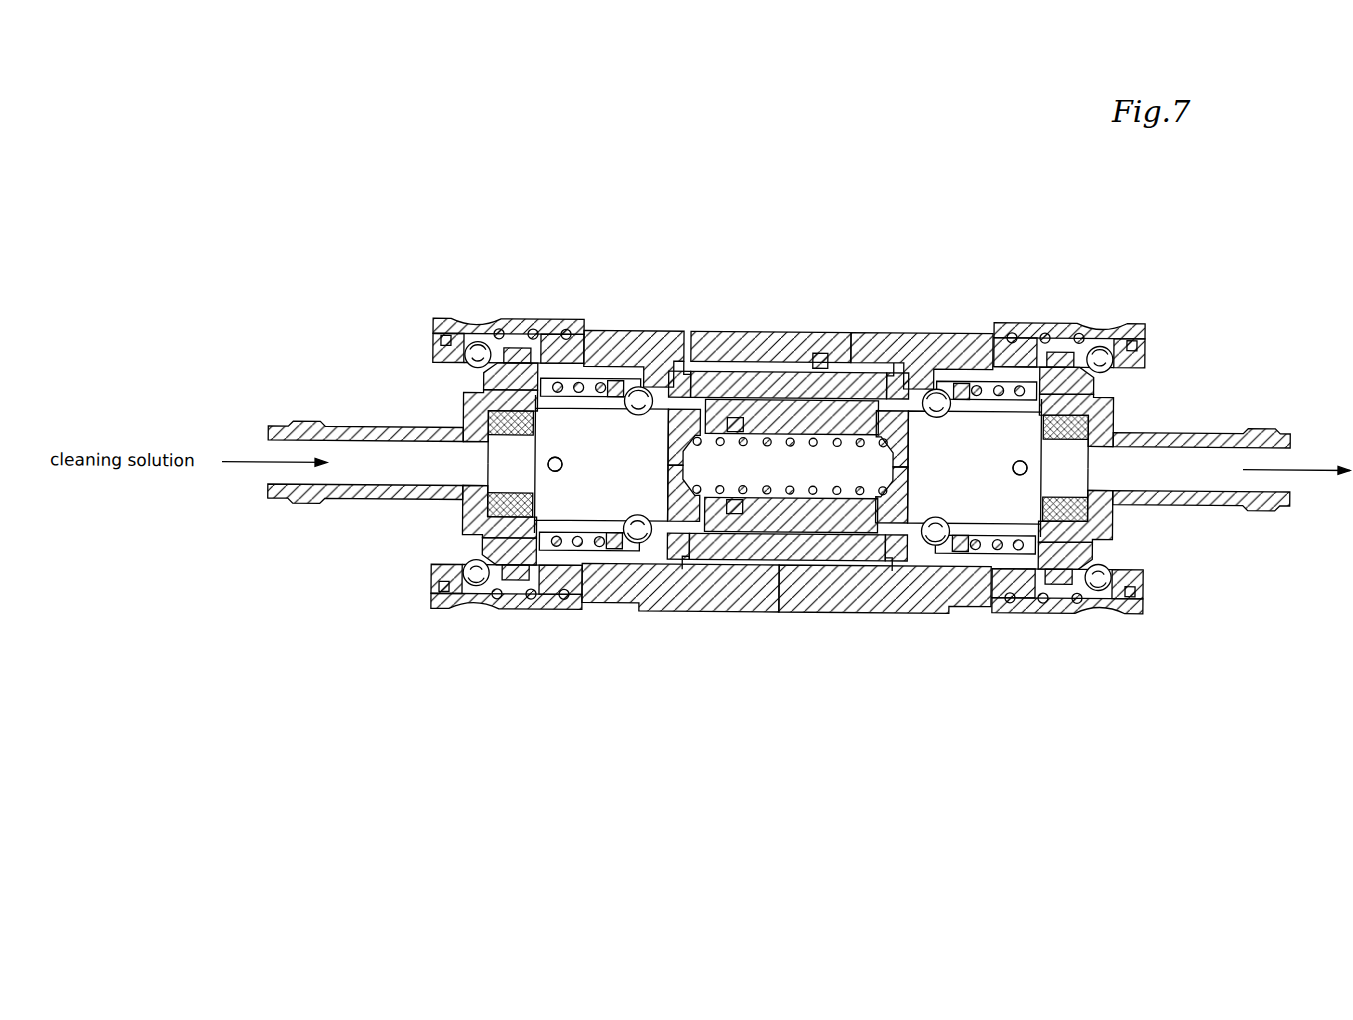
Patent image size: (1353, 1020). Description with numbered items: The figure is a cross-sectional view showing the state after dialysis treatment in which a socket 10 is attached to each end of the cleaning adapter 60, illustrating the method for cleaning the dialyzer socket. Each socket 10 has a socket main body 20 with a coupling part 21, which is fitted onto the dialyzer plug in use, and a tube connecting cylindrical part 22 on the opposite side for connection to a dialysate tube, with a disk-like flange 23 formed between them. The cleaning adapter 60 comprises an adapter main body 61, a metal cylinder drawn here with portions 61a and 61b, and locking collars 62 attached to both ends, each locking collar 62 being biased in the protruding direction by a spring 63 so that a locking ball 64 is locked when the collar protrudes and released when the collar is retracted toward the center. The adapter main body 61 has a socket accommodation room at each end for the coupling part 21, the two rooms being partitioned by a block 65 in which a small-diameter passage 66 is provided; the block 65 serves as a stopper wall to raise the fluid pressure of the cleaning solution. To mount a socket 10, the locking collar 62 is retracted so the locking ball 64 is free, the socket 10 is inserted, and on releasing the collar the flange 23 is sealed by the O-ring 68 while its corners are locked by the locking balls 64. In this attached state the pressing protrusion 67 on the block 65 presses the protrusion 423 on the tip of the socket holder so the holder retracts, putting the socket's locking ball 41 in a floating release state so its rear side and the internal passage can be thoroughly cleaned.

The socket 10 is at (1158, 518).
The socket main body 20 is at (1112, 415).
The coupling part 21 is at (980, 411).
The tube connecting cylindrical part 22 is at (1230, 430).
The flange 23 is at (1078, 382).
The locking ball 41 is at (931, 416).
The cleaning adapter 60 is at (652, 624).
The adapter main body 61 is at (912, 668).
The first housing part 61a is at (670, 598).
The second housing part 61b is at (895, 598).
The locking collar 62 is at (1130, 321).
The spring 63 is at (1038, 332).
The locking ball 64 is at (1113, 588).
The block 65 is at (830, 398).
The small-diameter passage 66 is at (750, 362).
The pressing protrusion 67 is at (895, 373).
The O-ring 68 is at (1060, 586).
The protrusion 423 is at (920, 362).